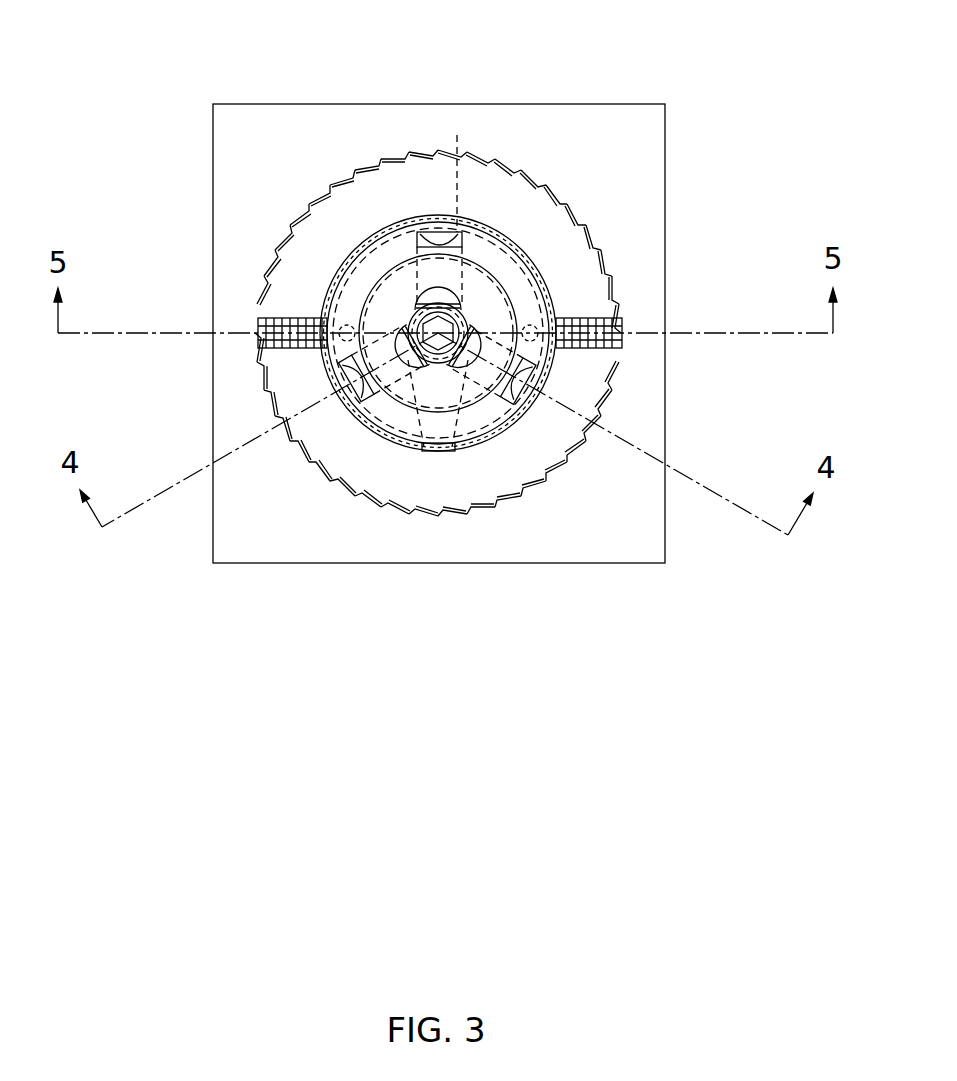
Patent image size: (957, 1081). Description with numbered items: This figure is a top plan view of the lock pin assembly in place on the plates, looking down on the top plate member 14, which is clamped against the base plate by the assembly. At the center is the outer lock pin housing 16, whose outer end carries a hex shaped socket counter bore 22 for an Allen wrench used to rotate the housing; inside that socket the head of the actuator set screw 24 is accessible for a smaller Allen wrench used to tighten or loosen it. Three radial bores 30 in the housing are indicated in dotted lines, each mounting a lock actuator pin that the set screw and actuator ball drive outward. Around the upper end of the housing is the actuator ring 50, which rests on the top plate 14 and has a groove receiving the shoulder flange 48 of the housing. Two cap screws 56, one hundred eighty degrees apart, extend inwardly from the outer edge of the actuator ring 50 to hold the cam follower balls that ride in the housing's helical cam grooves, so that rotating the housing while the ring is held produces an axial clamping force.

The top plate member 14 is at (607, 145).
The lock pin housing 16 is at (500, 310).
The hex shaped socket counter bore 22 is at (500, 305).
The actuator set screw 24 is at (433, 297).
The radial bores 30 is at (395, 253).
The shoulder flange 48 is at (380, 257).
The actuator ring 50 is at (525, 458).
The cap screws 56 is at (255, 313).